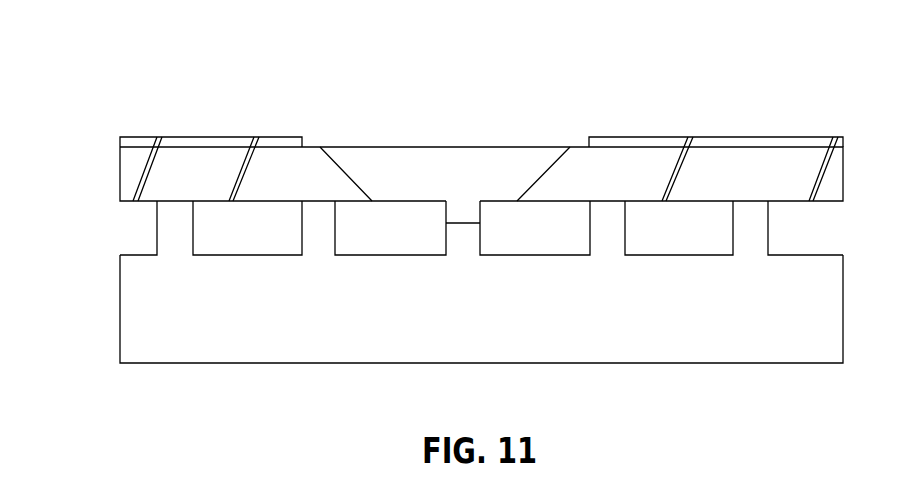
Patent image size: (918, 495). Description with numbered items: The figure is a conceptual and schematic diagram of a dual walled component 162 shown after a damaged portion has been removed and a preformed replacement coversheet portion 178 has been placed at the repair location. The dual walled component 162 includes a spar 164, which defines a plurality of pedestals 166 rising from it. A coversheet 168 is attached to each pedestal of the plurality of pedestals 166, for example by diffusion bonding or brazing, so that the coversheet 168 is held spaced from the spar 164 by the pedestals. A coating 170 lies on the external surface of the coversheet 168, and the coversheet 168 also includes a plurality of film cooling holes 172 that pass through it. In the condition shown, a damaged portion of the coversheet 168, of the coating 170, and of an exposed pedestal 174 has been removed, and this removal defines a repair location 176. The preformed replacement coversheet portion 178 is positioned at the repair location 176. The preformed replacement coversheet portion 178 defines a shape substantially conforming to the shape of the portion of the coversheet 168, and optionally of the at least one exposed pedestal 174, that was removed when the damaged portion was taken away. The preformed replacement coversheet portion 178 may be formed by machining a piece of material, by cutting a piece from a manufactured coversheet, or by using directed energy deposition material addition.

The dual walled component 162 is at (117, 76).
The spar 164 is at (128, 310).
The plurality of pedestals 166 is at (310, 228).
The coversheet 168 is at (130, 173).
The coating 170 is at (129, 143).
The plurality of film cooling holes 172 is at (247, 153).
The exposed pedestal 174 is at (463, 237).
The repair location 176 is at (474, 115).
The preformed replacement coversheet portion 178 is at (393, 170).